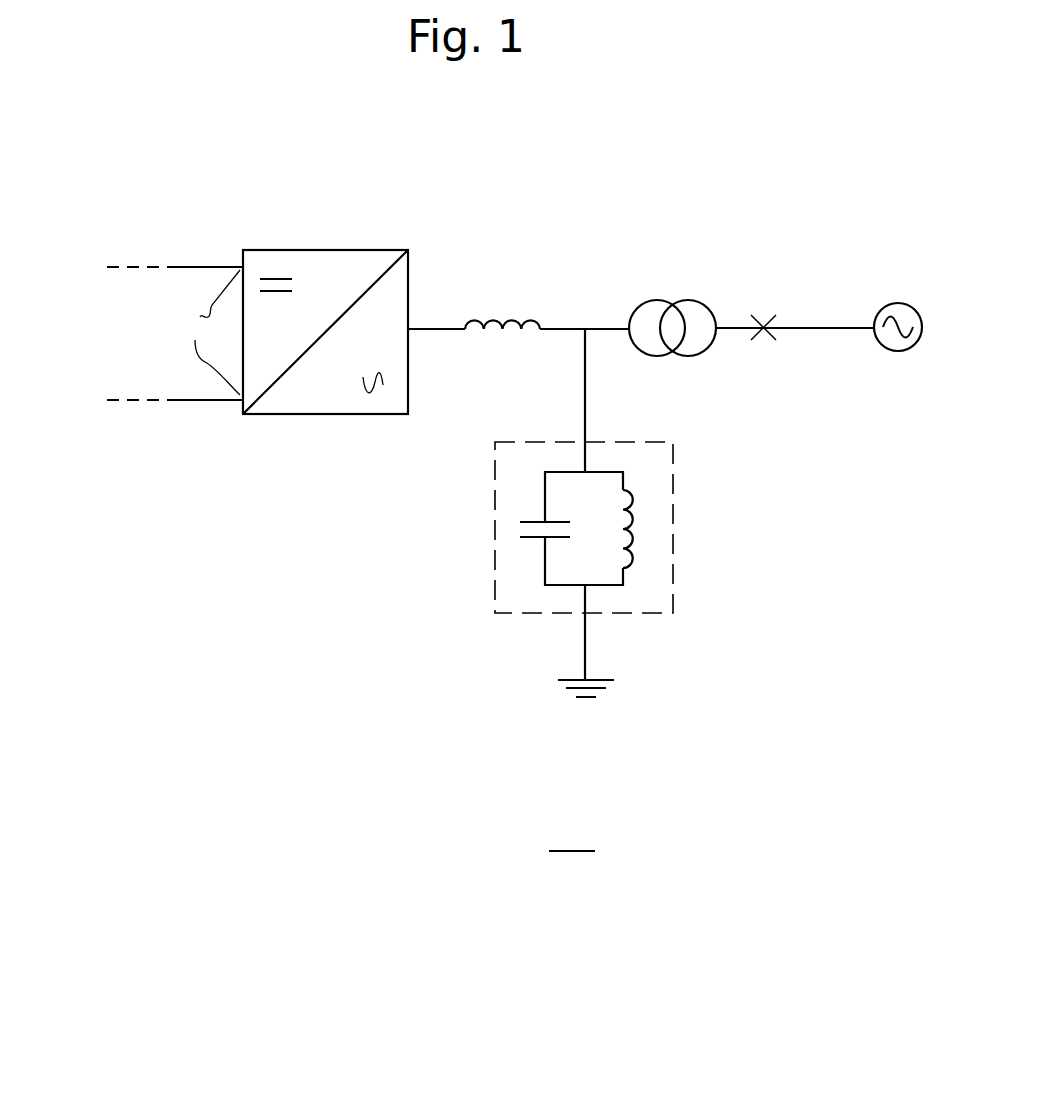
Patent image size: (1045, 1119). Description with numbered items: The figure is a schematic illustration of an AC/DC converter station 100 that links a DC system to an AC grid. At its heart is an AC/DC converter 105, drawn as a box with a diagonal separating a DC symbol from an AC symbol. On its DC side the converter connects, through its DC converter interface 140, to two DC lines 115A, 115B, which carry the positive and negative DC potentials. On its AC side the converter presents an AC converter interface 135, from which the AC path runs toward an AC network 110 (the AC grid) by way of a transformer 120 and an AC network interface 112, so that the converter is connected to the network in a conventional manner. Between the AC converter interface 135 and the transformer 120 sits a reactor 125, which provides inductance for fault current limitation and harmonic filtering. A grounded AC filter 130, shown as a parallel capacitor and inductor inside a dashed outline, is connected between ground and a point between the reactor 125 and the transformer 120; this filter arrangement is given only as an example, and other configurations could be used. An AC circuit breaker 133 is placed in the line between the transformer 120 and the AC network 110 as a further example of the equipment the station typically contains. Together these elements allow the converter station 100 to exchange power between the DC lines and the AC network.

The AC/DC converter station 100 is at (572, 838).
The AC/DC converter 105 is at (317, 415).
The AC network 110 is at (894, 352).
The AC network interface 112 is at (838, 322).
The DC line 115A is at (188, 265).
The DC line 115B is at (195, 403).
The transformer 120 is at (676, 356).
The reactor 125 is at (508, 333).
The grounded AC filter 130 is at (673, 553).
The AC circuit breaker 133 is at (767, 309).
The AC converter interface 135 is at (412, 320).
The DC converter interface 140 is at (194, 332).